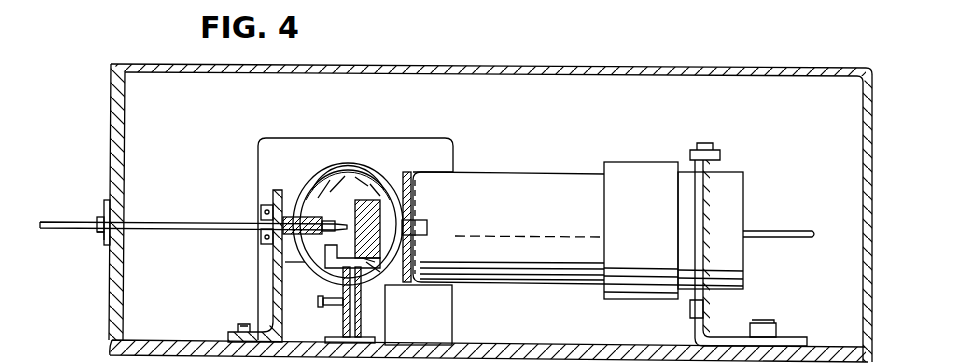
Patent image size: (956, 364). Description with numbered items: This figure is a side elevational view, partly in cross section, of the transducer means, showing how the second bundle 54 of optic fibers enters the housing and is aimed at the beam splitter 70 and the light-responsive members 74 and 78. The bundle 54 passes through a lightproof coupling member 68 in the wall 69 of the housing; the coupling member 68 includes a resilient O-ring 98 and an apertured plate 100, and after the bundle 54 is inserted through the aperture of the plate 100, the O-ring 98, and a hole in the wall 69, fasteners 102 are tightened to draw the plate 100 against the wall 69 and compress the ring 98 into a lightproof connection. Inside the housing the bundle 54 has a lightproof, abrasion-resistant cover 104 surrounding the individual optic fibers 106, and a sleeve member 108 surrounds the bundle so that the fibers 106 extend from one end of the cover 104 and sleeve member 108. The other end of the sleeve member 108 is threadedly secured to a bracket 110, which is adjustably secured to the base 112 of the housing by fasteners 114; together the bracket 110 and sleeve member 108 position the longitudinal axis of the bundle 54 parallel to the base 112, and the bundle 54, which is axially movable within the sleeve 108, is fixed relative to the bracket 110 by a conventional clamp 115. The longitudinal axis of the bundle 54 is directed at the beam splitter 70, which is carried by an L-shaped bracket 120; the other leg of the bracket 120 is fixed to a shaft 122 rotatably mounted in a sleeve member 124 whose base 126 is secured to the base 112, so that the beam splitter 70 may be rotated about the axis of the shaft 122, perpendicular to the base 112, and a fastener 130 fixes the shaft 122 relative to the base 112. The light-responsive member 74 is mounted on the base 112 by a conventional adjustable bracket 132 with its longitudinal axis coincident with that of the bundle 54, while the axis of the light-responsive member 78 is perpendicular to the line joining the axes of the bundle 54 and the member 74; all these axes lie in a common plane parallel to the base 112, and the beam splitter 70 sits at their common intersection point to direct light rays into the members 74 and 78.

The second bundle of optic fibers 54 is at (58, 222).
The lightproof coupling member 68 is at (100, 178).
The wall 69 is at (112, 98).
The beam splitter 70 is at (378, 272).
The light-responsive member 74 is at (522, 190).
The light-responsive member 78 is at (355, 164).
The resilient O-ring 98 is at (111, 222).
The apertured plate 100 is at (106, 245).
The fasteners 102 is at (102, 233).
The cover 104 is at (318, 222).
The optic fibers 106 is at (340, 232).
The sleeve member 108 is at (302, 218).
The bracket 110 is at (273, 300).
The base 112 is at (530, 322).
The fasteners 114 is at (240, 330).
The clamp 115 is at (262, 238).
The L-shaped bracket 120 is at (285, 262).
The shaft 122 is at (372, 330).
The sleeve member 124 is at (362, 306).
The base 126 is at (335, 340).
The fastener 130 is at (328, 302).
The adjustable bracket 132 is at (795, 337).